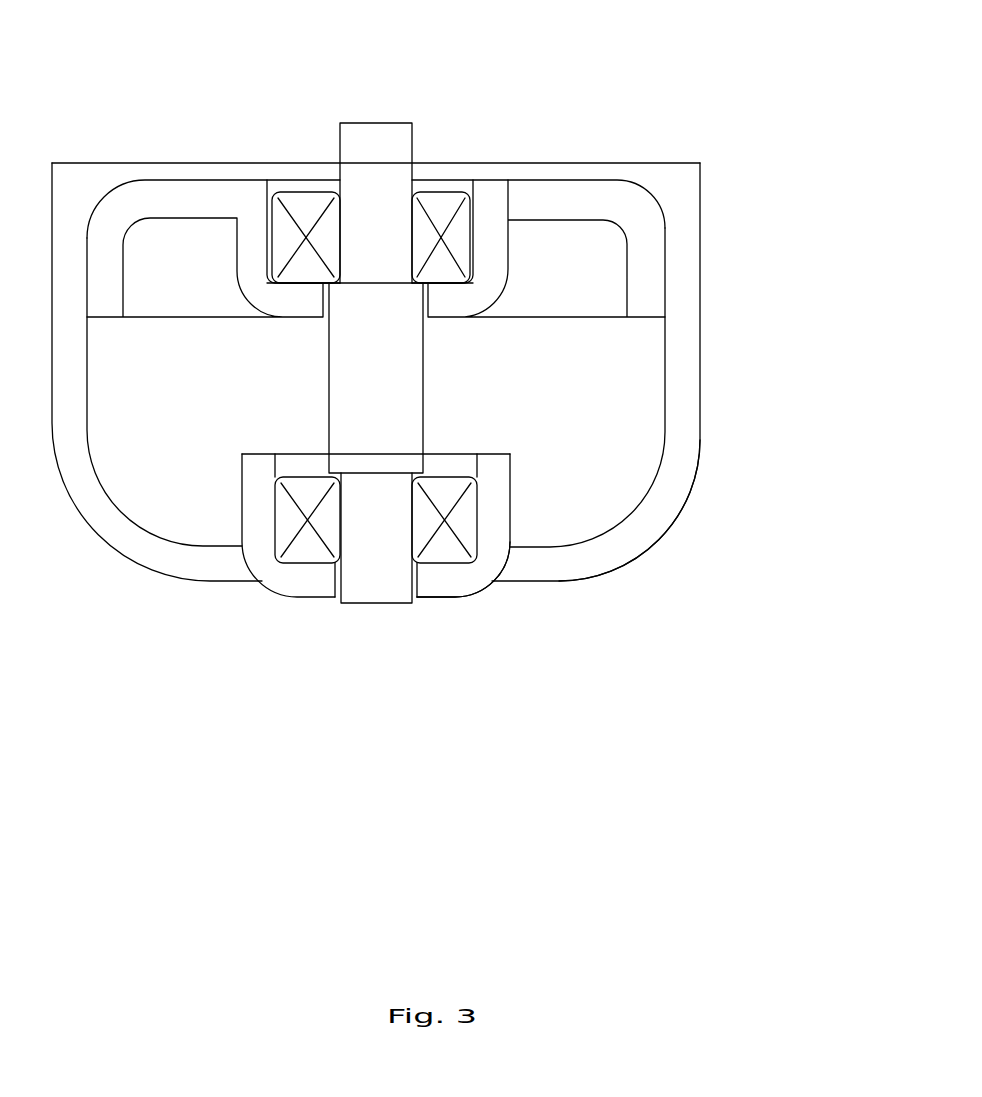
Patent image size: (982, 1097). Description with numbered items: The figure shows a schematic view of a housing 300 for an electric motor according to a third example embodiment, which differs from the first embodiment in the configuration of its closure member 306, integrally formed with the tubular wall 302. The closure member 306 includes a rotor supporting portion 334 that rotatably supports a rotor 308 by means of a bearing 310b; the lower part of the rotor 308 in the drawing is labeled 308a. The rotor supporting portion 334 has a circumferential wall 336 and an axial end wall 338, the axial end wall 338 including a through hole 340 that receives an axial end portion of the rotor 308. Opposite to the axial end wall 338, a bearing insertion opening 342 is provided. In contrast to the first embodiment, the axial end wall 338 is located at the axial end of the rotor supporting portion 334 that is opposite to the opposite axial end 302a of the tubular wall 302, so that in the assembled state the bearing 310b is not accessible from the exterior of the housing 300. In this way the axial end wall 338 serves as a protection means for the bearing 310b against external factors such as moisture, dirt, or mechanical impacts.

The housing 300 is at (747, 90).
The tubular wall 302 is at (706, 340).
The opposite axial end of the tubular wall 302a is at (706, 208).
The closure member 306 is at (671, 548).
The rotor 308 is at (395, 377).
The shaft lower portion 308a is at (403, 532).
The bearing 310b is at (310, 548).
The rotor supporting portion 334 is at (528, 507).
The circumferential wall 336 is at (495, 523).
The axial end wall 338 is at (452, 580).
The through hole 340 is at (420, 608).
The bearing insertion opening 342 is at (463, 466).